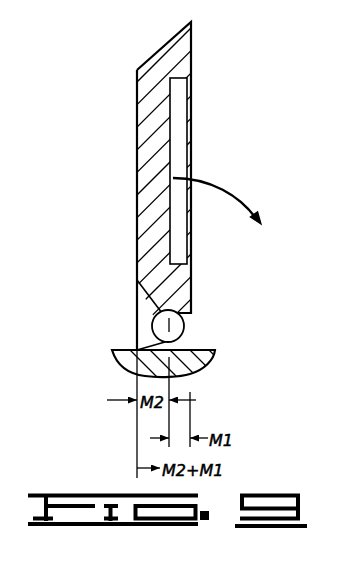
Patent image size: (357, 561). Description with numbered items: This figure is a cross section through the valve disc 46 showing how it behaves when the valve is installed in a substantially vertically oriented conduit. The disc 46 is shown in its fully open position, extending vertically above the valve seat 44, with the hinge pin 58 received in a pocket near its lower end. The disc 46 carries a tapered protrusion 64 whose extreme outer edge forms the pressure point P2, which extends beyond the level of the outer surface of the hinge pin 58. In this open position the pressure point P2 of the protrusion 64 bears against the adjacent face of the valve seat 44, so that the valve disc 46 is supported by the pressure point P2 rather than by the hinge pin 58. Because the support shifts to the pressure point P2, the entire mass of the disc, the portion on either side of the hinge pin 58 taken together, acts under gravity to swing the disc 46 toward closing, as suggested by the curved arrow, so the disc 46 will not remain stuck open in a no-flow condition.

The valve disc 46 is at (137, 137).
The protrusion 64 is at (143, 305).
The hinge pin 58 is at (183, 323).
The pressure point P2 is at (160, 347).
The valve seat 44 is at (128, 365).